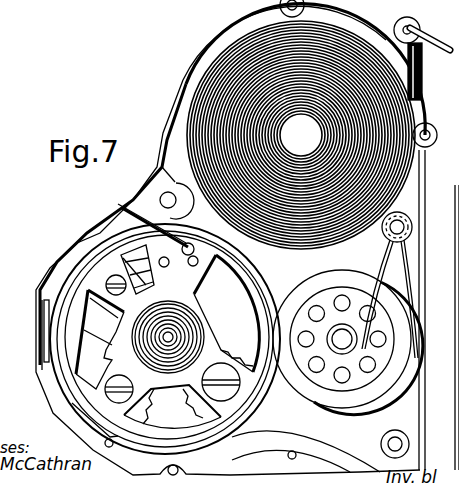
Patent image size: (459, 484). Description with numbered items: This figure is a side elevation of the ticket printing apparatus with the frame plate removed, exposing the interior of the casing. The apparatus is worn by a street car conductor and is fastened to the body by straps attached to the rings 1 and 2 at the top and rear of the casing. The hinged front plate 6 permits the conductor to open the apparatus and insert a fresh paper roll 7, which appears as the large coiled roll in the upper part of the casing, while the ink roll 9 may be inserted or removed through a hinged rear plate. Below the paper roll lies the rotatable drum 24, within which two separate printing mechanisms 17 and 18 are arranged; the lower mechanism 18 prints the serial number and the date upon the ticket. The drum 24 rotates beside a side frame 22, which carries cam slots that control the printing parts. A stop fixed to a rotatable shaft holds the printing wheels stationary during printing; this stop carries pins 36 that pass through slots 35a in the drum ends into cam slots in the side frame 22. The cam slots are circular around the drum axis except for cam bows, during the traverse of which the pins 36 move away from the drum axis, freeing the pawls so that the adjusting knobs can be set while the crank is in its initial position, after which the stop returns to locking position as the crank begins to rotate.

The ring 1 is at (433, 256).
The ring 2 is at (454, 12).
The hinged front plate 6 is at (178, 93).
The paper roll 7 is at (420, 100).
The ink roll 9 is at (403, 360).
The printing mechanism 17 is at (196, 404).
The printing mechanism 18 is at (88, 384).
The side frame 22 is at (298, 124).
The drum 24 is at (67, 342).
The slot 35a is at (198, 262).
The pin 36 is at (122, 208).